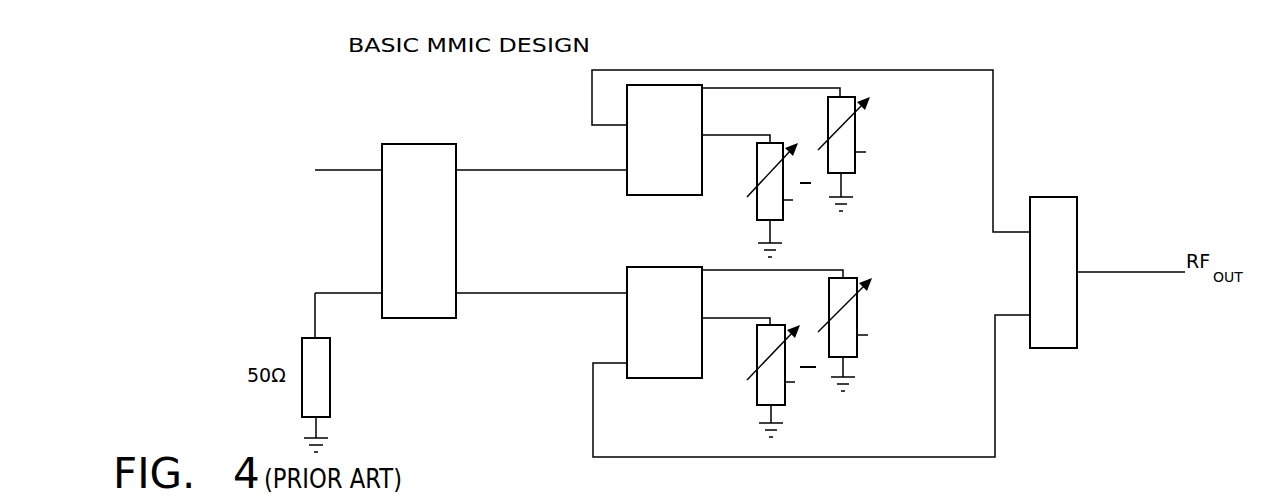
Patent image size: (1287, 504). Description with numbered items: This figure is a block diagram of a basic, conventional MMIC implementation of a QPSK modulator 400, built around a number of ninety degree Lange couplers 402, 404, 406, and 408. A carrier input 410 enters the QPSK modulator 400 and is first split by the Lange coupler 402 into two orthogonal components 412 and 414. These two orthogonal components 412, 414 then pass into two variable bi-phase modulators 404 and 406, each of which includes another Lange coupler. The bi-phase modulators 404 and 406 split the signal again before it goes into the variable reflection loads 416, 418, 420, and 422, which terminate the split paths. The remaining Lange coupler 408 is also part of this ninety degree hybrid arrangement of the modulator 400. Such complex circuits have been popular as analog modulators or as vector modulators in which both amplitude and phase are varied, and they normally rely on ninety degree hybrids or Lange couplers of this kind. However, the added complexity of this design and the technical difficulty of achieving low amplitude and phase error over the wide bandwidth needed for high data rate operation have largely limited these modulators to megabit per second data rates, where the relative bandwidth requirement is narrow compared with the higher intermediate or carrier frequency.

The QPSK modulator 400 is at (1078, 114).
The Lange coupler 402 is at (420, 143).
The variable bi-phase modulator 404 is at (627, 143).
The variable bi-phase modulator 406 is at (627, 335).
The Lange coupler 408 is at (1053, 195).
The carrier input 410 is at (351, 172).
The orthogonal component 412 is at (542, 172).
The orthogonal component 414 is at (500, 295).
The variable reflection load 416 is at (827, 110).
The variable reflection load 418 is at (757, 210).
The variable reflection load 420 is at (828, 288).
The variable reflection load 422 is at (757, 390).